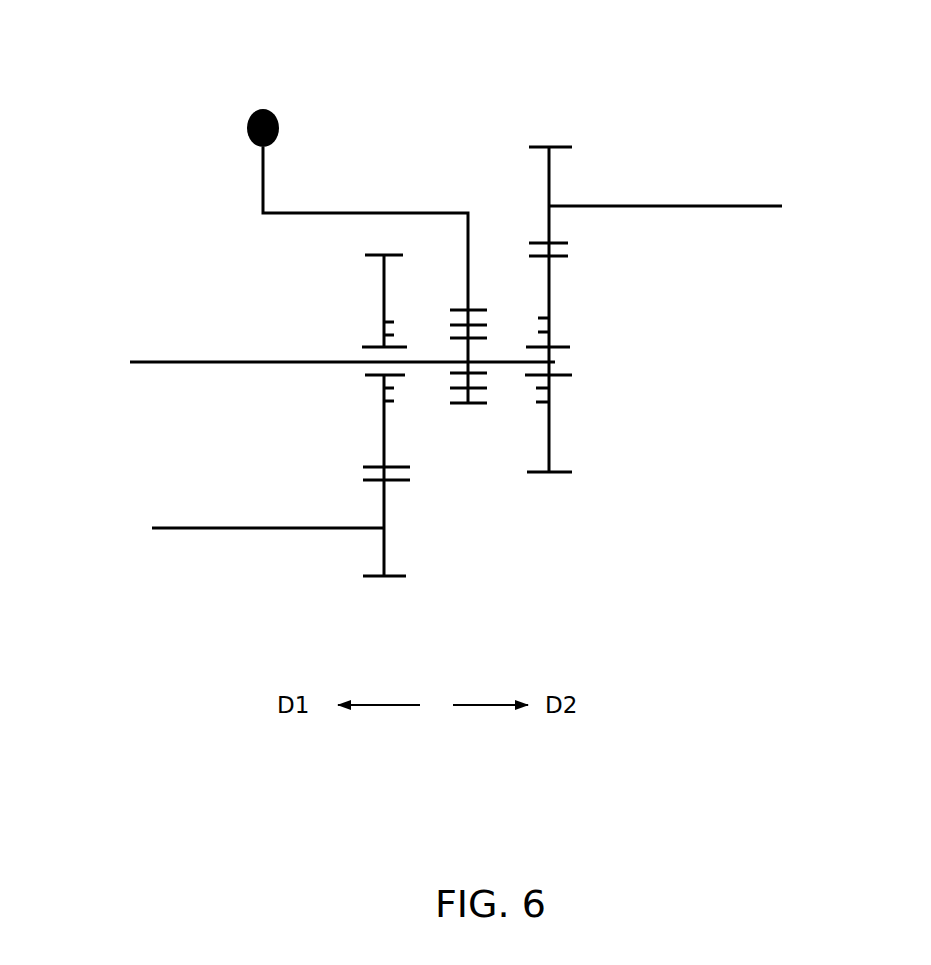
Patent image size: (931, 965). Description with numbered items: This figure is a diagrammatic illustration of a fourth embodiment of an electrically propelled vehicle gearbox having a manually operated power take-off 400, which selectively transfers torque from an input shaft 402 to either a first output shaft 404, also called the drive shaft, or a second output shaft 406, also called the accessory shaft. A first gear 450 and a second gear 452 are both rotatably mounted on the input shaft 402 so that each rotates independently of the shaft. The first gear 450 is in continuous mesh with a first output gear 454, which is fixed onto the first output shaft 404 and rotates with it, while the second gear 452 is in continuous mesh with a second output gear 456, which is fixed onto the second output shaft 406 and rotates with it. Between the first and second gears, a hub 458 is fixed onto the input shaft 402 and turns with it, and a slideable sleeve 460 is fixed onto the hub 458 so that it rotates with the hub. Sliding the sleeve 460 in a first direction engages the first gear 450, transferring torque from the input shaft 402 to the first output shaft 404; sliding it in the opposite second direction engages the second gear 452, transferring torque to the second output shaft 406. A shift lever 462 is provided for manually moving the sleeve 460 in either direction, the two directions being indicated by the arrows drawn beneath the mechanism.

The power take-off 400 is at (460, 128).
The input shaft 402 is at (145, 355).
The first output shaft 404 is at (185, 530).
The second output shaft 406 is at (727, 207).
The first gear 450 is at (363, 322).
The second gear 452 is at (568, 412).
The first output gear 454 is at (394, 533).
The second output gear 456 is at (570, 185).
The hub 458 is at (470, 348).
The slideable sleeve 460 is at (478, 403).
The shift lever 462 is at (236, 125).